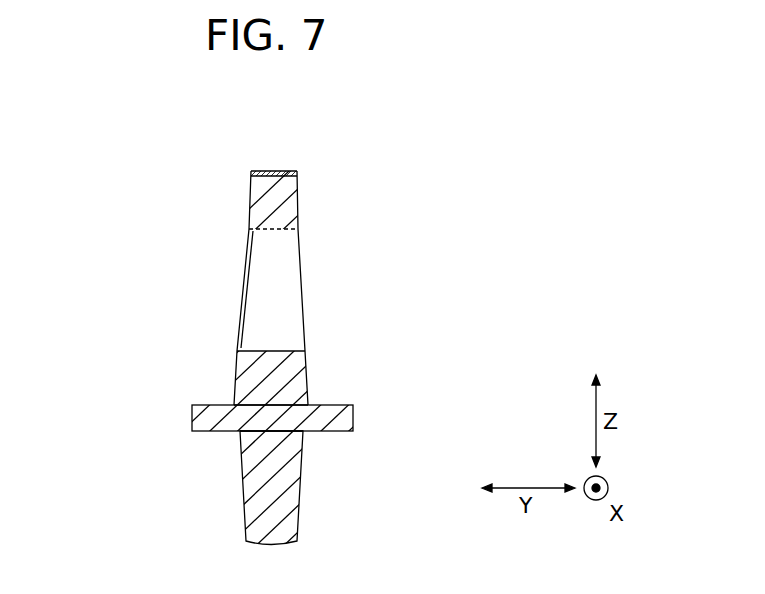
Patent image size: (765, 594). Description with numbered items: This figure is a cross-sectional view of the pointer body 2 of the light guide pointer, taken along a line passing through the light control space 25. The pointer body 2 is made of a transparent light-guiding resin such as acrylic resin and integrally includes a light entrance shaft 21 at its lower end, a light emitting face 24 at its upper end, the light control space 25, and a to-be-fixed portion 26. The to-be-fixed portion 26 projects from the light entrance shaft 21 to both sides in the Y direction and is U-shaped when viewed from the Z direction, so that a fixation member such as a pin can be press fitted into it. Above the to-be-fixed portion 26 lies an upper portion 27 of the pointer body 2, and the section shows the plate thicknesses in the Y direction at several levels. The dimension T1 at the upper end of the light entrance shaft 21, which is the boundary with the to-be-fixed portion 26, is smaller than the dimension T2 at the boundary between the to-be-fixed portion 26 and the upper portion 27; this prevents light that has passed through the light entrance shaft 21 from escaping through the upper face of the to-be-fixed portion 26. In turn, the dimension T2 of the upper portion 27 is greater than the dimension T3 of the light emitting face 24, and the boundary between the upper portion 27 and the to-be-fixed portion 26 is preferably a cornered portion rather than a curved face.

The pointer body 2 is at (368, 267).
The light entrance shaft 21 is at (302, 492).
The light emitting face 24 is at (275, 171).
The light control space 25 is at (247, 271).
The to-be-fixed portion 26 is at (192, 413).
The upper portion 27 is at (307, 372).
The Y direction dimension at upper end of light entrance shaft T1 is at (304, 457).
The Y direction dimension at boundary between to-be-fixed portion and upper portion T2 is at (295, 405).
The Y direction dimension of light emitting face T3 is at (296, 192).